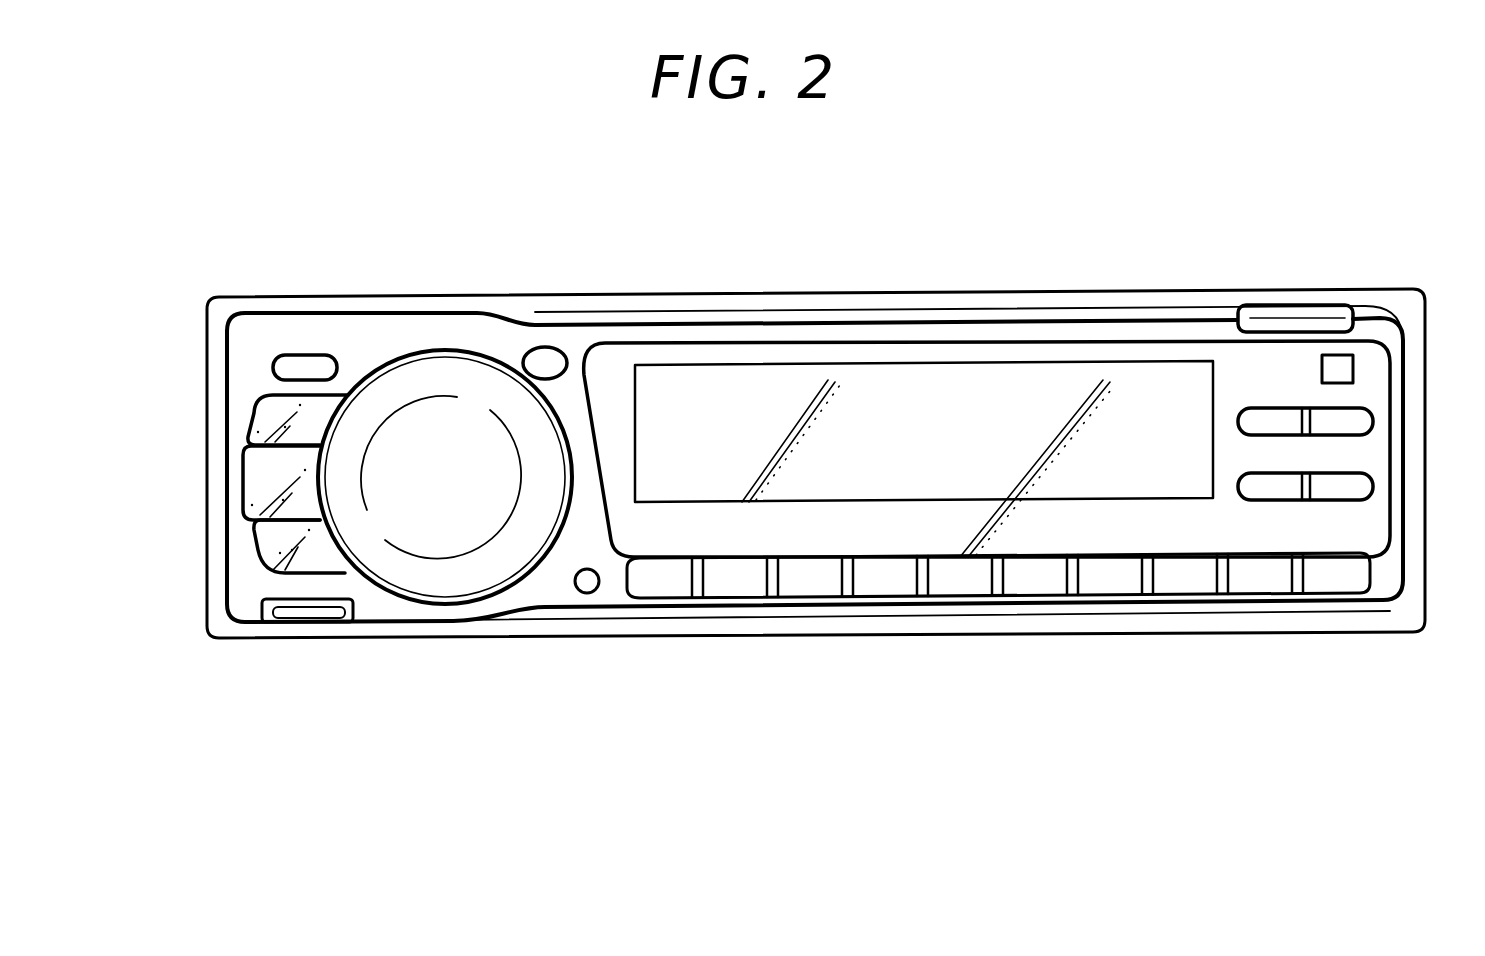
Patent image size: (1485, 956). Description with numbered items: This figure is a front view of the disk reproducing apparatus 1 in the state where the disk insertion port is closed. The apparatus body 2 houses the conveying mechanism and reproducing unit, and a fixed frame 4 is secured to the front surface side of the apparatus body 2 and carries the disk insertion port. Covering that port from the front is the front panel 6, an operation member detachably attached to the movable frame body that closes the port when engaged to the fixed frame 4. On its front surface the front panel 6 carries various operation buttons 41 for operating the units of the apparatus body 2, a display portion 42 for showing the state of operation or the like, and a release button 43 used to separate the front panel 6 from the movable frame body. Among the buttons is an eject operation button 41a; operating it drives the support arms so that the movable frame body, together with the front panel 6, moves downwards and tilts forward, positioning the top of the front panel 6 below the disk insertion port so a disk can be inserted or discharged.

The disk reproducing apparatus 1 is at (331, 268).
The apparatus body 2 is at (556, 295).
The fixed frame 4 is at (705, 297).
The front panel 6 is at (540, 592).
The operation buttons 41 is at (1342, 492).
The eject operation button 41a is at (1263, 313).
The display portion 42 is at (883, 387).
The release button 43 is at (328, 611).